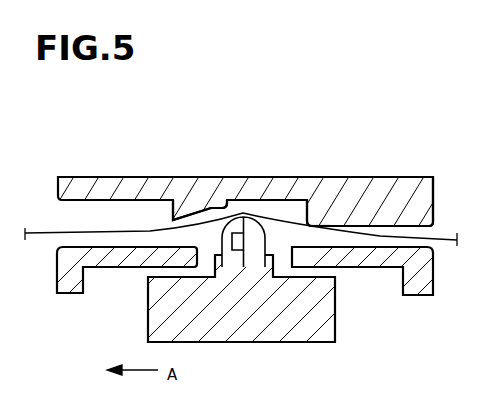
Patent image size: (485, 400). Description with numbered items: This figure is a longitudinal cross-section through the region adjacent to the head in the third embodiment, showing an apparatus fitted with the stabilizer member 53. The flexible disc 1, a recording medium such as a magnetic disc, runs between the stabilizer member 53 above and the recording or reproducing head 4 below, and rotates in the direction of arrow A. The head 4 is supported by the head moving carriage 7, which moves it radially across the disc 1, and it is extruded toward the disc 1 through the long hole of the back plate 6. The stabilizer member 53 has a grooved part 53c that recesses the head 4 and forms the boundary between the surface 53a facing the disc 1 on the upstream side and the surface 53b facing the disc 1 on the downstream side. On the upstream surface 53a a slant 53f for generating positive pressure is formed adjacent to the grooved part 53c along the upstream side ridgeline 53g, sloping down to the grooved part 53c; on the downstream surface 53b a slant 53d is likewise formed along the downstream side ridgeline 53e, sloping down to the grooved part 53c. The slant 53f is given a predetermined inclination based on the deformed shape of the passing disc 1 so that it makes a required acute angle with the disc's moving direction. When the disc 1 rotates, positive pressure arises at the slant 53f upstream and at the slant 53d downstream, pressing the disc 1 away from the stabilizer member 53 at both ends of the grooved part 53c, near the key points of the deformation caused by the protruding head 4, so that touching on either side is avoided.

The flexible disc 1 is at (448, 246).
The recording or reproducing head 4 is at (255, 258).
The back plate 6 is at (57, 273).
The head moving carriage 7 is at (304, 330).
The stabilizer member 53 is at (269, 183).
The upstream side surface facing the disc 53a is at (400, 224).
The downstream side surface facing the disc 53b is at (118, 200).
The grooved part 53c is at (305, 202).
The downstream side slant 53d is at (193, 212).
The downstream side ridgeline 53e is at (225, 206).
The upstream side slant 53f is at (372, 223).
The upstream side ridgeline 53g is at (320, 190).